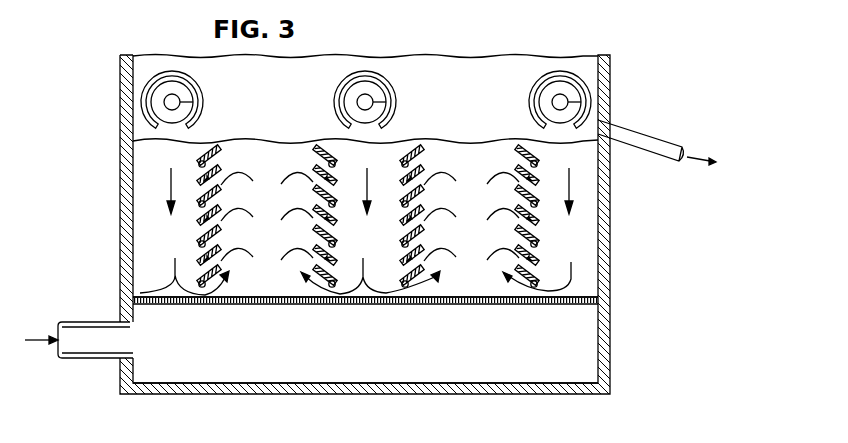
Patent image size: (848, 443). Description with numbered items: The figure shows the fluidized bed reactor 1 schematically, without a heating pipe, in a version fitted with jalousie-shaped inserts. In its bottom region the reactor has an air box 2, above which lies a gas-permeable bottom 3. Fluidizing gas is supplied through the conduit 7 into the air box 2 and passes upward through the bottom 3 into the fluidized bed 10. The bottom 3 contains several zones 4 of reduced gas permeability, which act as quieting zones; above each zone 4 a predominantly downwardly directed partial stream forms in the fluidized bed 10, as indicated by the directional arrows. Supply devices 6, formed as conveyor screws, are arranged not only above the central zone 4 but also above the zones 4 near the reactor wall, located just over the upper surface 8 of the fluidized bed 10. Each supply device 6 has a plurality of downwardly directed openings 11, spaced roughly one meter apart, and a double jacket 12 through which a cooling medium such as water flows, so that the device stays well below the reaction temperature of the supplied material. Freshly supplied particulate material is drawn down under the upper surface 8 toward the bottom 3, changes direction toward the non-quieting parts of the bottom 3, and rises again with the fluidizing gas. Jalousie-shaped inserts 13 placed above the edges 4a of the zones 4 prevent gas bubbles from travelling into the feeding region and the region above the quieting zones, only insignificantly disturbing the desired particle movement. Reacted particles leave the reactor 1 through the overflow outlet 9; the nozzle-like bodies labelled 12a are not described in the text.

The fluidized bed reactor 1 is at (608, 222).
The air box 2 is at (147, 330).
The bottom 3 is at (457, 305).
The zones of reduced gas permeability 4 is at (565, 305).
The edges of the zones 4a is at (313, 297).
The supply device 6 is at (552, 83).
The conduit 7 is at (95, 342).
The upper surface of the fluidized bed 8 is at (257, 140).
The overflow outlet 9 is at (637, 133).
The fluidized bed 10 is at (478, 234).
The downwardly directed openings 11 is at (368, 132).
The double jacket 12 is at (343, 83).
The nozzle bodies 12a is at (522, 200).
The jalousie-shaped inserts 13 is at (537, 236).